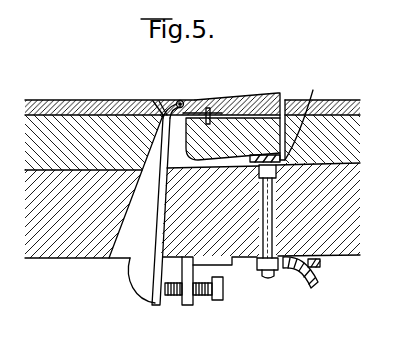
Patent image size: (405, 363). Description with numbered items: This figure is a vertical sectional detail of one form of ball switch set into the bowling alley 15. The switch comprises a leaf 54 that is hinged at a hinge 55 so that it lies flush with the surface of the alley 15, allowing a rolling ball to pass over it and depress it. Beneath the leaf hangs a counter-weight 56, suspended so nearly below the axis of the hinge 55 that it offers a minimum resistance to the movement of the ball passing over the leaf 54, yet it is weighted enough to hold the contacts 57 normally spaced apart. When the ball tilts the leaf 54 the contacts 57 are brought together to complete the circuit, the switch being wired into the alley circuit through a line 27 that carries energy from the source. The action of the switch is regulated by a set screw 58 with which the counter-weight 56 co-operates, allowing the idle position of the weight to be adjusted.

The alley 15 is at (47, 108).
The leaf 54 is at (257, 100).
The hinge 55 is at (181, 99).
The counter-weight 56 is at (132, 272).
The contacts 57 is at (298, 105).
The set screw 58 is at (212, 305).
The line 27 is at (317, 282).